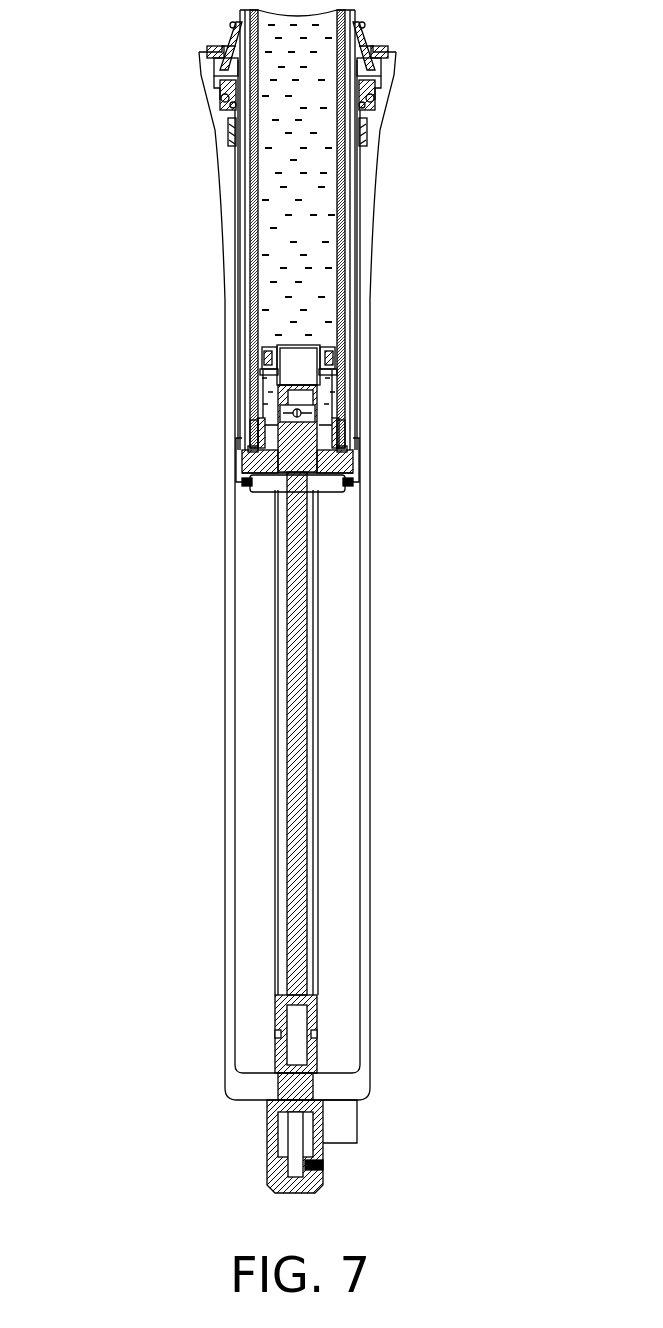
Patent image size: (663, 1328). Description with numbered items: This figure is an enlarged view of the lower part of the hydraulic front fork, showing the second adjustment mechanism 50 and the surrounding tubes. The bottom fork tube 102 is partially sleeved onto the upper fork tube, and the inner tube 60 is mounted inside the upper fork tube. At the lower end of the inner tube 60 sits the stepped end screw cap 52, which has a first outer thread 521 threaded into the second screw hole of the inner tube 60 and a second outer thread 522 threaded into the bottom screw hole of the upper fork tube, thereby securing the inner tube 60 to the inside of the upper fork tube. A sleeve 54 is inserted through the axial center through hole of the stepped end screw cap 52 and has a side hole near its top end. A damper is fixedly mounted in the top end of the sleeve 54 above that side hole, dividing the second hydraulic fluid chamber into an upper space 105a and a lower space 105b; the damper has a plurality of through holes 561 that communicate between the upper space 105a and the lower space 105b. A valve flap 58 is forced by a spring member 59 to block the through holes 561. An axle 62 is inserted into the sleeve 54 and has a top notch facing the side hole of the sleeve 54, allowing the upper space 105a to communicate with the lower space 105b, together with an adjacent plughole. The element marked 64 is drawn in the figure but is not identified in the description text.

The second adjustment mechanism 50 is at (266, 662).
The stepped end screw cap 52 is at (250, 466).
The sleeve 54 is at (316, 660).
The valve flap 58 is at (340, 376).
The spring member 59 is at (265, 360).
The inner tube 60 is at (352, 190).
The axle 62 is at (300, 773).
The sleeve 64 is at (258, 428).
The bottom fork tube 102 is at (225, 895).
The upper space 105a is at (290, 190).
The lower space 105b is at (265, 383).
The first outer thread 521 is at (343, 425).
The second outer thread 522 is at (352, 470).
The through holes 561 is at (262, 350).